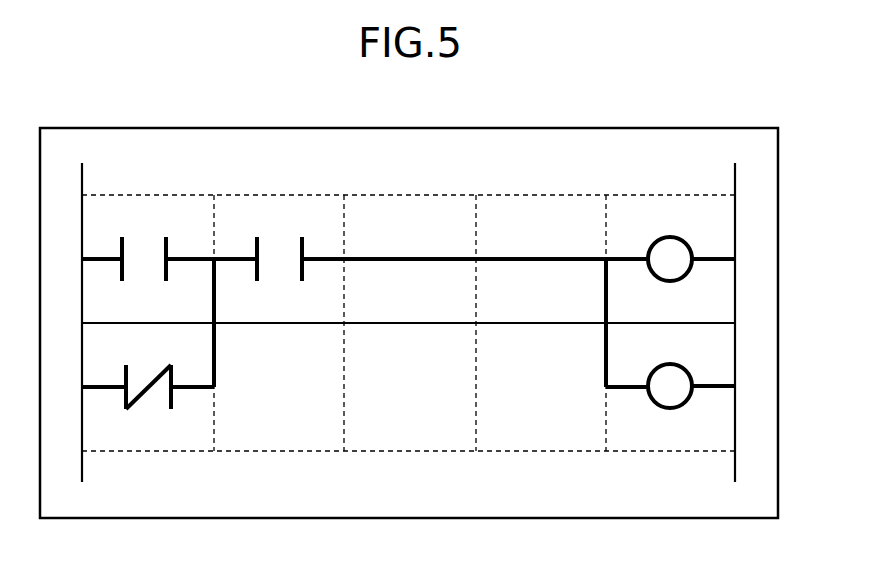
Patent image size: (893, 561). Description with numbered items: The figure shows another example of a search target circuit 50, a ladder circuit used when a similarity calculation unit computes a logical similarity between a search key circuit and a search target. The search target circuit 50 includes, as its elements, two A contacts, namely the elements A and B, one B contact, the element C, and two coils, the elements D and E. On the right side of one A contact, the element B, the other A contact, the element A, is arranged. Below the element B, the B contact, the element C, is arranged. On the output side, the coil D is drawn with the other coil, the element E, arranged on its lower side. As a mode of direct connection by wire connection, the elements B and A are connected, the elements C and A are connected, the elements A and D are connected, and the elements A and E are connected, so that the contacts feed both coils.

The search target circuit 50 is at (698, 128).
The A contact A is at (279, 246).
The A contact B is at (144, 246).
The B contact C is at (148, 374).
The coil D is at (670, 244).
The coil E is at (670, 372).